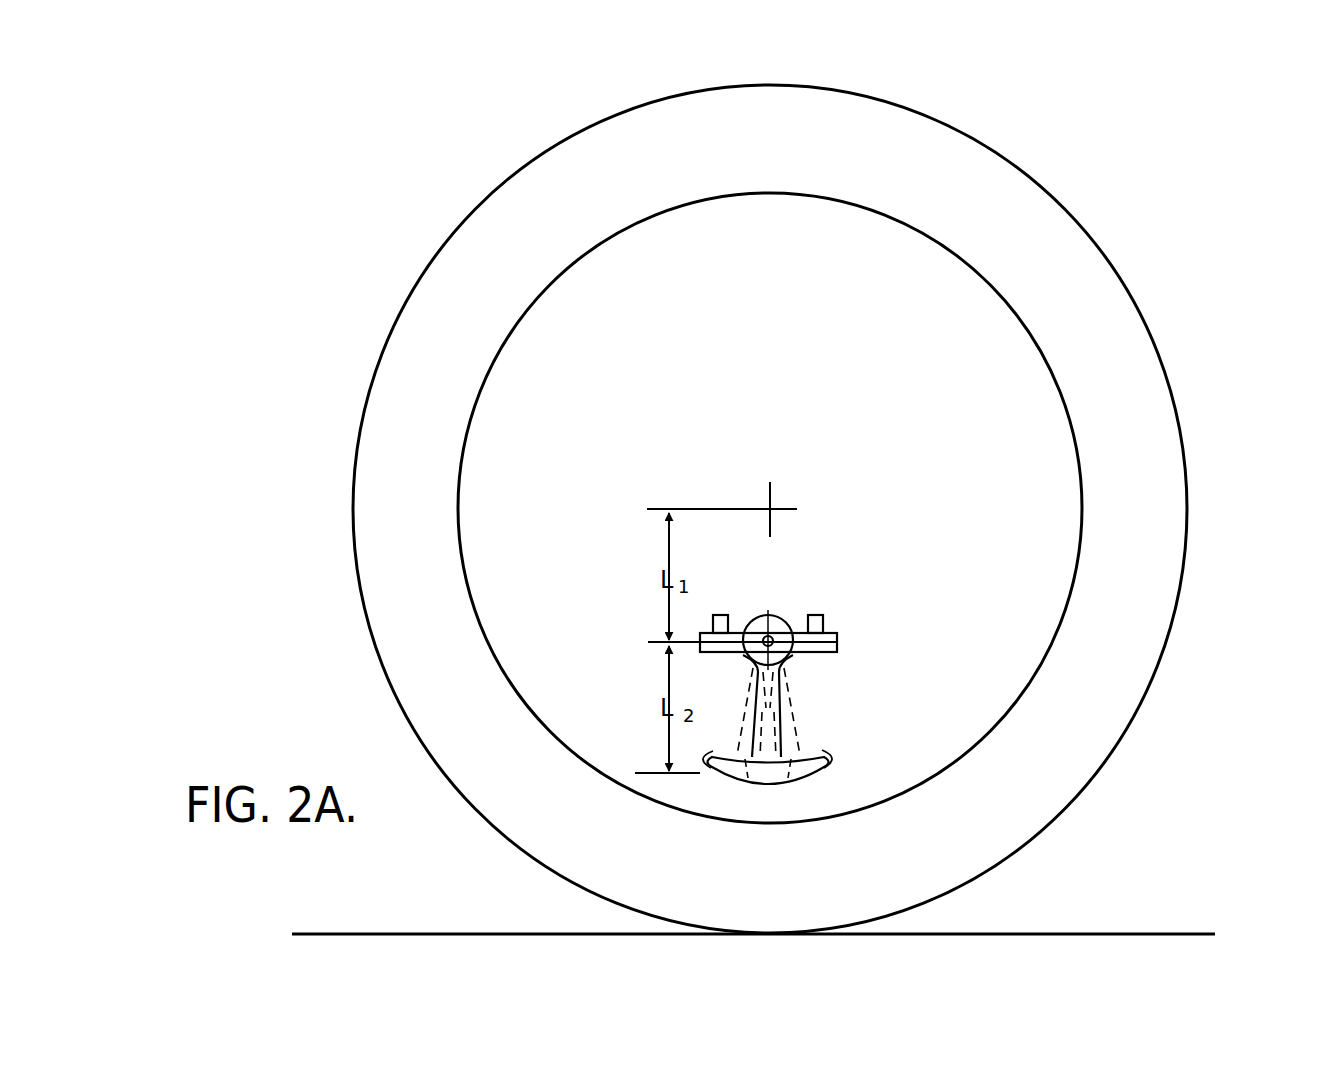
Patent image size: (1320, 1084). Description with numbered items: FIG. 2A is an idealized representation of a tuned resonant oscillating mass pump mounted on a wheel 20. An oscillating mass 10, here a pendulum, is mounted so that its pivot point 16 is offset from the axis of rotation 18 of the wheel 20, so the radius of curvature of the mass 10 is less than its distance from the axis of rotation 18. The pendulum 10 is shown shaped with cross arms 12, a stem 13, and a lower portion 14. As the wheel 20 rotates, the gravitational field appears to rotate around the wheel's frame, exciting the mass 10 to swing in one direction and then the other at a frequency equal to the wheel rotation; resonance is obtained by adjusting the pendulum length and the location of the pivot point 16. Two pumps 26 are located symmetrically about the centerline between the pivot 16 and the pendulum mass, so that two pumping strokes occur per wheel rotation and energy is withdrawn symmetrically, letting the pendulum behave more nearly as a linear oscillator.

The wheel 20 is at (1219, 249).
The axis of rotation 18 is at (775, 504).
The oscillating mass 10 is at (806, 684).
The cross arms 12 is at (728, 654).
The pumps 26 is at (724, 614).
The pivot point 16 is at (773, 637).
The stem 13 is at (783, 720).
The lower portion 14 is at (785, 782).